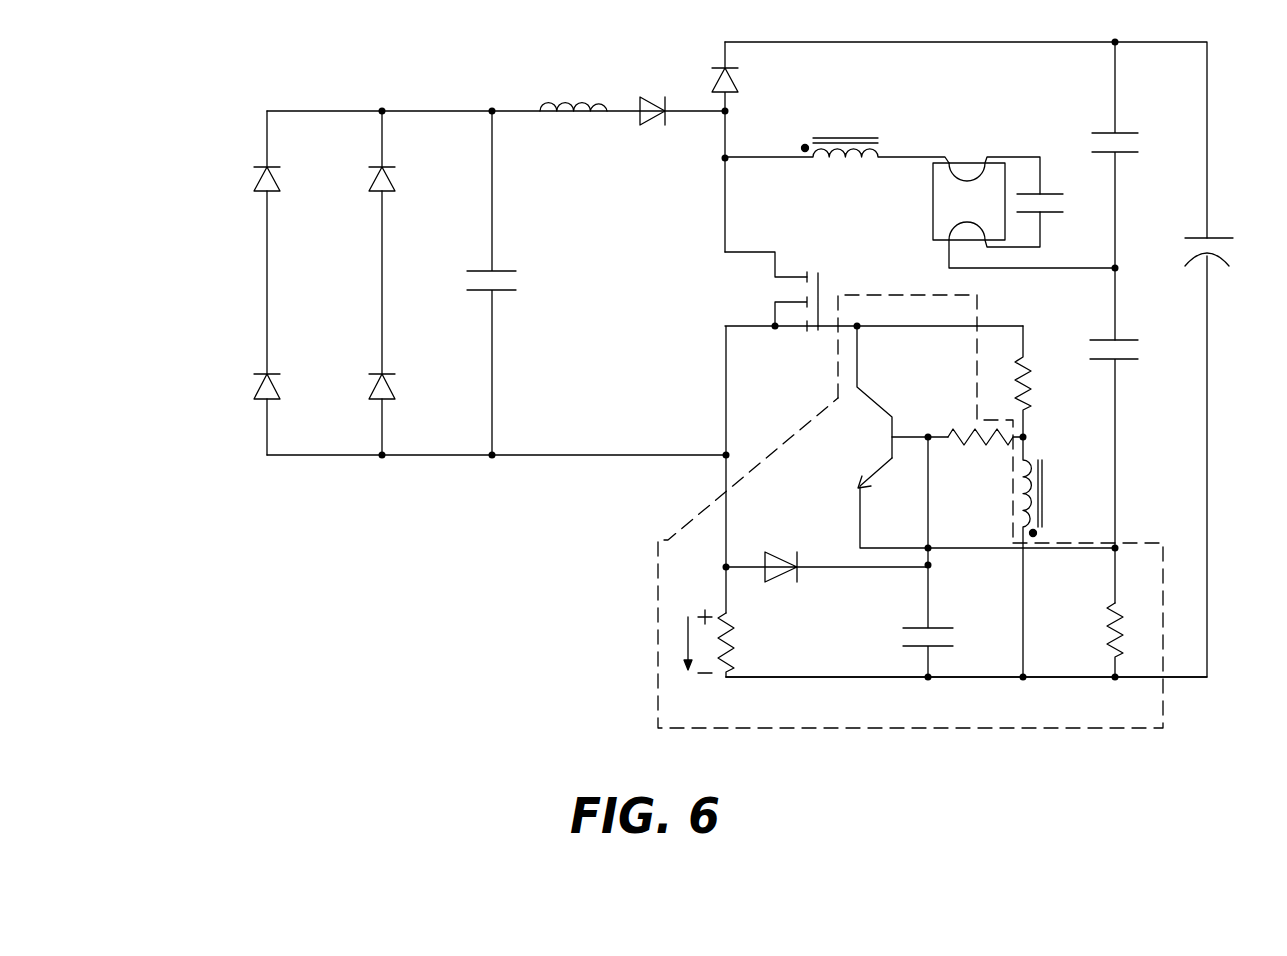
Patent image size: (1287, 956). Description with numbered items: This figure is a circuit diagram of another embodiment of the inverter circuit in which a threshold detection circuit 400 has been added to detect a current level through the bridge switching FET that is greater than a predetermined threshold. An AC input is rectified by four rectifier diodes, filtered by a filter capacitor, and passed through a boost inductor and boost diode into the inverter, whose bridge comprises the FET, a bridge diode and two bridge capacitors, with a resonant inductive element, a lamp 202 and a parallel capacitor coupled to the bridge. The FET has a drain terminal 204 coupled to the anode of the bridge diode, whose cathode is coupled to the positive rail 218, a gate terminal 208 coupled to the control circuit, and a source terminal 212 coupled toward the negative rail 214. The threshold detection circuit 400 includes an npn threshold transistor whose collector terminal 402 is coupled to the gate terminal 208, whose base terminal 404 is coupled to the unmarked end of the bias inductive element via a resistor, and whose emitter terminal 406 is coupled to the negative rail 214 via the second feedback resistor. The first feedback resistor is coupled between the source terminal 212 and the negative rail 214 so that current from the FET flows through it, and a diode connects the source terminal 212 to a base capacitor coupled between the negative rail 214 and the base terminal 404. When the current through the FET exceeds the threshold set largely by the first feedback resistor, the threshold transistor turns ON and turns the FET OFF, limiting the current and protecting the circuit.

The positive rail 218 is at (927, 42).
The drain terminal 204 is at (747, 250).
The lamp 202 is at (932, 197).
The gate terminal 208 is at (900, 323).
The source terminal 212 is at (765, 330).
The collector terminal 402 is at (877, 403).
The base terminal 404 is at (900, 433).
The emitter terminal 406 is at (887, 475).
The threshold detection circuit 400 is at (680, 523).
The negative rail 214 is at (848, 678).